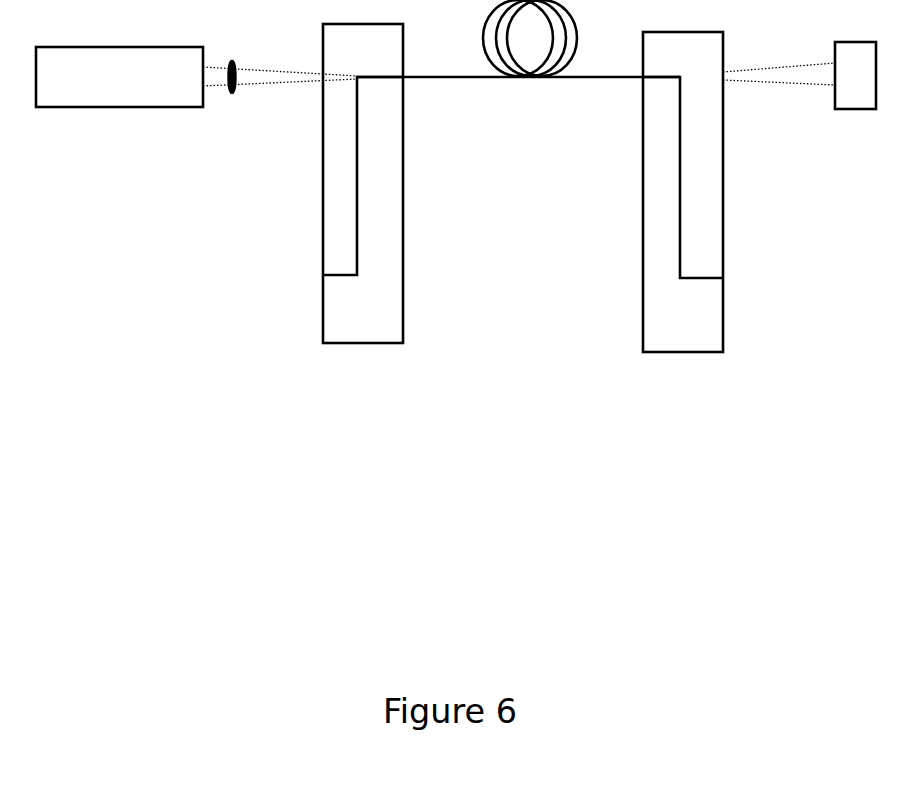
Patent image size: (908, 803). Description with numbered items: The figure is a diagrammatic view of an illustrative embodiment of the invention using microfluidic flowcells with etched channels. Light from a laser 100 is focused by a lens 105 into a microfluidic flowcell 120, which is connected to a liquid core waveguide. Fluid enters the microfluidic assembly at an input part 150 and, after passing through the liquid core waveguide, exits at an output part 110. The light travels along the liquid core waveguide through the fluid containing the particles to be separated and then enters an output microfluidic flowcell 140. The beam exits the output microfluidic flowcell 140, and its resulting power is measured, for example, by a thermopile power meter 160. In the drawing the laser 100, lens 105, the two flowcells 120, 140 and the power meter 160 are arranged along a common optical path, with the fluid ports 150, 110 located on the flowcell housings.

The laser 100 is at (119, 62).
The lens 105 is at (232, 92).
The output part 110 is at (363, 183).
The microfluidic flowcell 120 is at (363, 162).
The output microfluidic flowcell 140 is at (683, 158).
The input part 150 is at (683, 192).
The thermopile power meter 160 is at (856, 94).